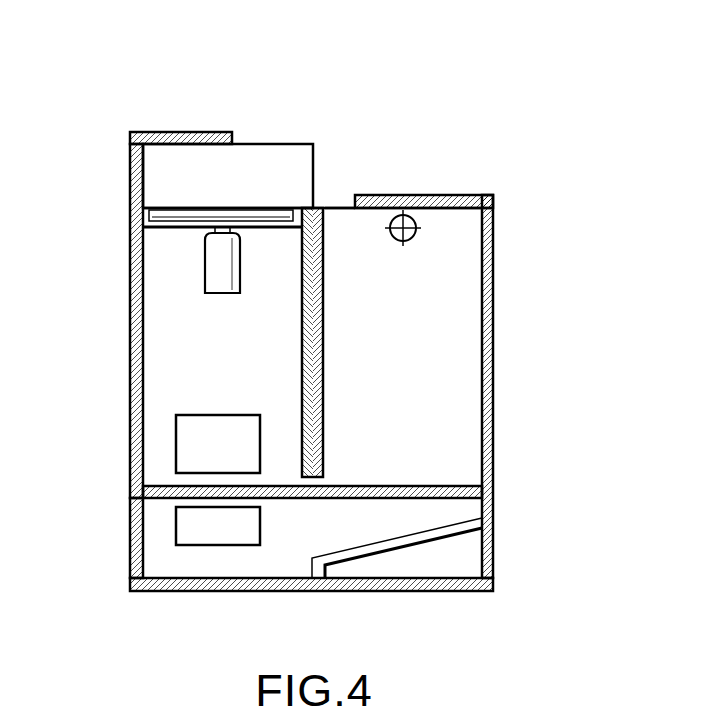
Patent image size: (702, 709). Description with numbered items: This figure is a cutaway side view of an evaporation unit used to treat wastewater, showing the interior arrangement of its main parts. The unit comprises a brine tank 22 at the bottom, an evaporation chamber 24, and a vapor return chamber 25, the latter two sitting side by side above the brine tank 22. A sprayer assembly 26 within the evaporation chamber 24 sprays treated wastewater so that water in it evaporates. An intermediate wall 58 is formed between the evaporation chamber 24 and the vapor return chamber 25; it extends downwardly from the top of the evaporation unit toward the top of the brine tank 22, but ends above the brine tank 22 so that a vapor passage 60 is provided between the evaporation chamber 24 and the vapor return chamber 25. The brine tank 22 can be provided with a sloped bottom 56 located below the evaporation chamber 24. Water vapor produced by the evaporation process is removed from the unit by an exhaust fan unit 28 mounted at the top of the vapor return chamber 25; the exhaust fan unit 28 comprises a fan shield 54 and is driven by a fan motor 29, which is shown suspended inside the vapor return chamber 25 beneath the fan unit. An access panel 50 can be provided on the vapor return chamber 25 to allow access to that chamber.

The brine tank 22 is at (143, 533).
The evaporation chamber 24 is at (478, 355).
The vapor return chamber 25 is at (145, 360).
The sprayer assembly 26 is at (404, 243).
The exhaust fan unit 28 is at (334, 174).
The fan motor 29 is at (208, 295).
The access panel 50 is at (176, 442).
The fan shield 54 is at (283, 143).
The sloped bottom 56 is at (368, 545).
The intermediate wall 58 is at (326, 408).
The vapor passage 60 is at (345, 472).